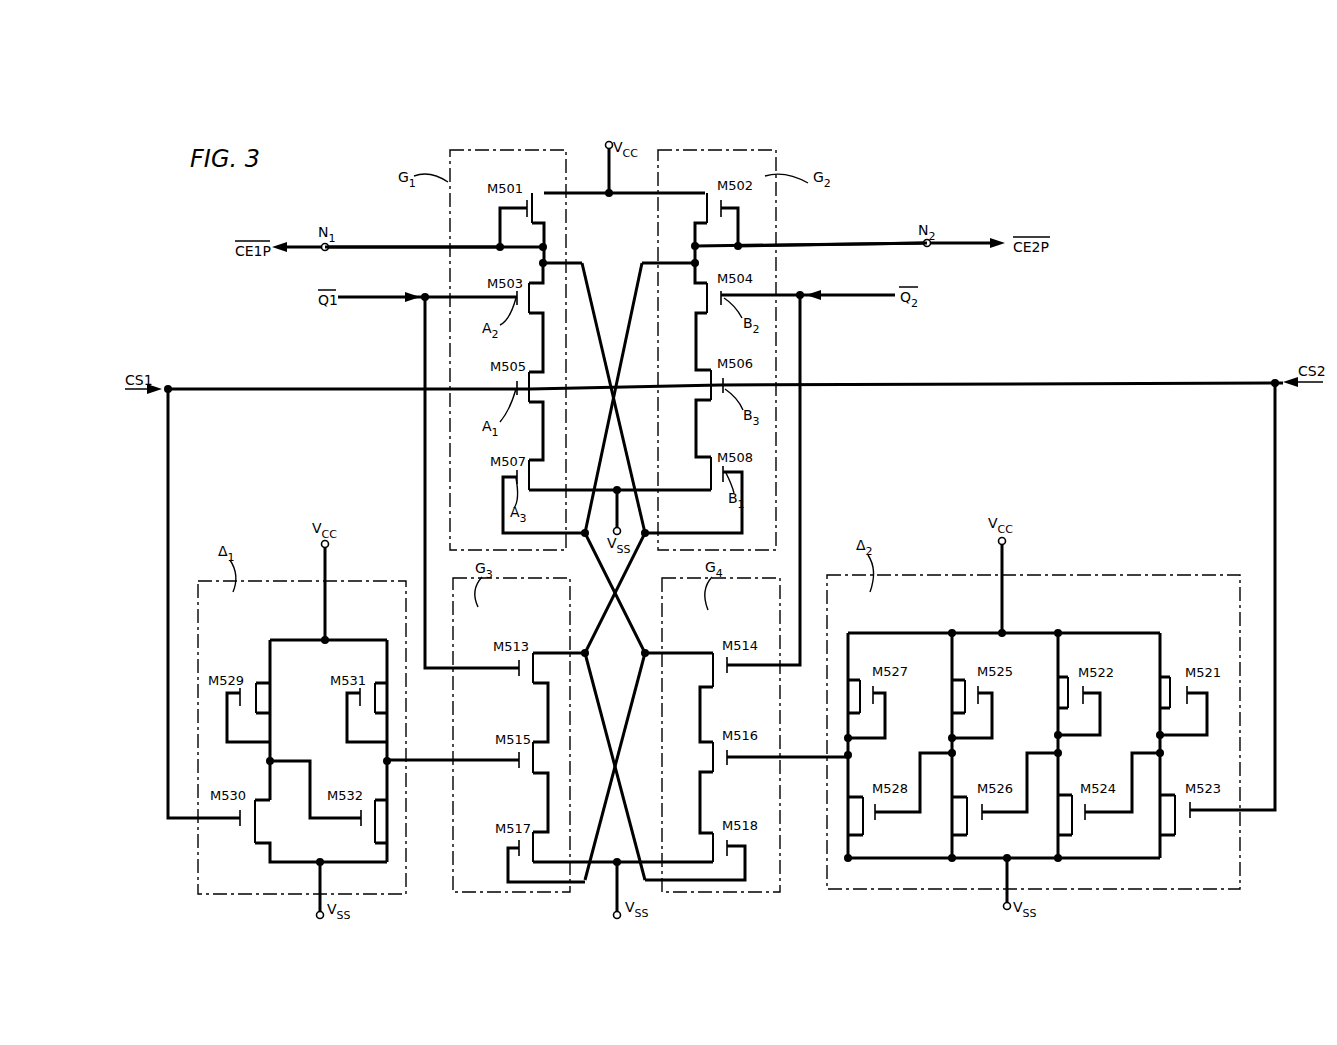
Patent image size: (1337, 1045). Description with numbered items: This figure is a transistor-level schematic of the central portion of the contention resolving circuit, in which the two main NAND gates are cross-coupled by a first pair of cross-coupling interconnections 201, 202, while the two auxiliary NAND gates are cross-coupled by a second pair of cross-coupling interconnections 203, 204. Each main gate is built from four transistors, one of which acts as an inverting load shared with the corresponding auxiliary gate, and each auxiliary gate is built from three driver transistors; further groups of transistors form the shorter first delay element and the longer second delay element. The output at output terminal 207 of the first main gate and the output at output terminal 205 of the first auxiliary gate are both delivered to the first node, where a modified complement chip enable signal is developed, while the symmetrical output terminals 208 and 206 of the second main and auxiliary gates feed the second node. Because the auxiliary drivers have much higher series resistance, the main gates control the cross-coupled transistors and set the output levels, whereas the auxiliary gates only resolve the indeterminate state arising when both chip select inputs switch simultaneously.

The cross-coupling interconnection 201 is at (604, 352).
The cross-coupling interconnection 202 is at (623, 355).
The cross-coupling interconnection 203 is at (598, 832).
The cross-coupling interconnection 204 is at (636, 832).
The output terminal 205 is at (589, 657).
The output terminal 206 is at (644, 651).
The output terminal 207 is at (386, 245).
The output terminal 208 is at (852, 243).